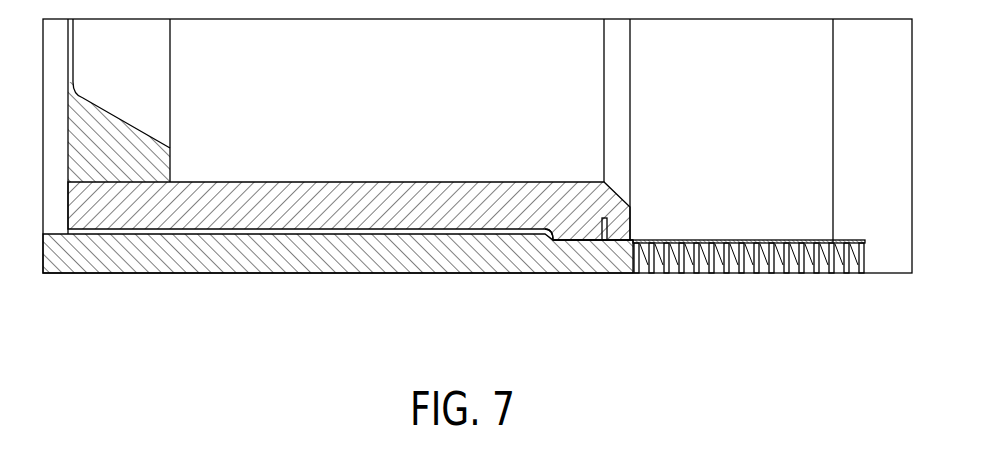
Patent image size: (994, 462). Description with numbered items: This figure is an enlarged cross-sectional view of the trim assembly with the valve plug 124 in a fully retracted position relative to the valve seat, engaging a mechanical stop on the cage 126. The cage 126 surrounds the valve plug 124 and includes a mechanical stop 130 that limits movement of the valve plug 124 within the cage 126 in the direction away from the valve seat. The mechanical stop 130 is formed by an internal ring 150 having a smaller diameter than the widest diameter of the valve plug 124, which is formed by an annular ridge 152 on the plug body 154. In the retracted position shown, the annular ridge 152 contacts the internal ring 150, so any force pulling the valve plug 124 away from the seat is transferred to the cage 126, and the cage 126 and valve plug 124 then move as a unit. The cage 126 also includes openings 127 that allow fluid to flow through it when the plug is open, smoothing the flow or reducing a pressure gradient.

The valve plug 124 is at (293, 197).
The plug body 154 is at (360, 200).
The annular ridge 152 is at (580, 238).
The cage 126 is at (355, 262).
The internal ring 150 is at (553, 241).
The mechanical stop 130 is at (593, 252).
The openings 127 is at (675, 271).